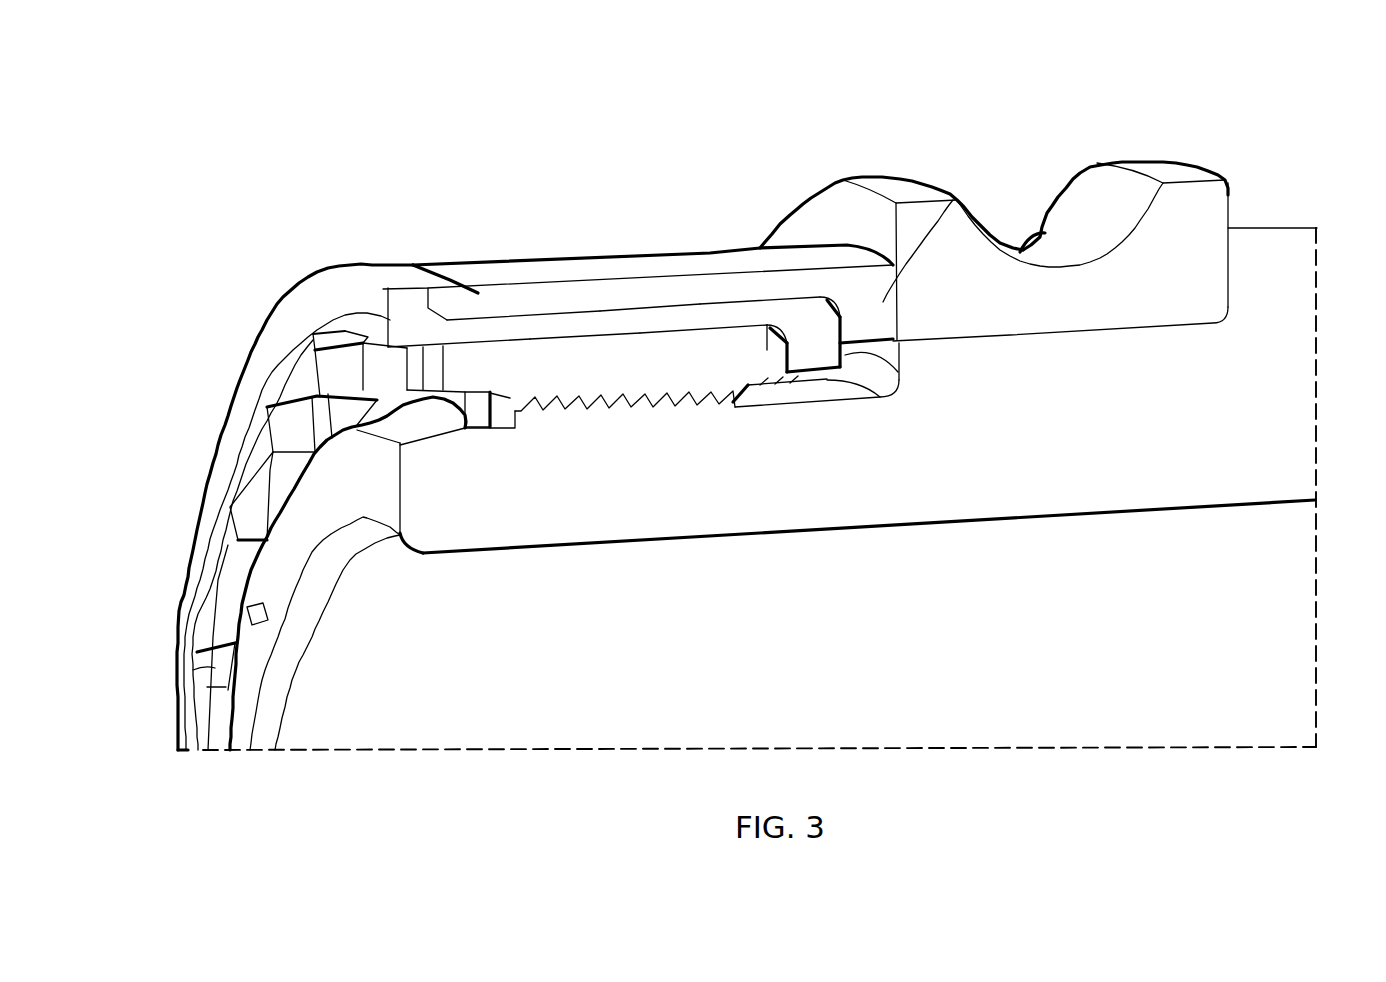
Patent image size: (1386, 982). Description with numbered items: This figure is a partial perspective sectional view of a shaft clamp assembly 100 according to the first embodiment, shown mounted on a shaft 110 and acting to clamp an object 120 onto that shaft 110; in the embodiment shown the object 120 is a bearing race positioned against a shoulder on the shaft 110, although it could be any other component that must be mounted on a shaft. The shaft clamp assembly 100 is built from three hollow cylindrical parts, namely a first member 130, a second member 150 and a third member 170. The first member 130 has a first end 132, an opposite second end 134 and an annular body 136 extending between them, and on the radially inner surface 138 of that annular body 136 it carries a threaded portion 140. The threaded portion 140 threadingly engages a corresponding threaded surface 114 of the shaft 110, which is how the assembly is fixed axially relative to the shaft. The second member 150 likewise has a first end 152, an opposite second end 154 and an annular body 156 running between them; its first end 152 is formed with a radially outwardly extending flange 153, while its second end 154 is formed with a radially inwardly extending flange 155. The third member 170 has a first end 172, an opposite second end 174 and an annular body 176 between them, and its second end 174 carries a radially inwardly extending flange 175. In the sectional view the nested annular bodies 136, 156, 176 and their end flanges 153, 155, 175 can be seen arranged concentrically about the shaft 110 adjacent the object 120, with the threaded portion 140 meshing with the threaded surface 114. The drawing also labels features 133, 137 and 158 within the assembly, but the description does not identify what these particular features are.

The shaft clamp assembly 100 is at (262, 268).
The shaft 110 is at (1290, 413).
The threaded surface 114 is at (556, 412).
The object 120 is at (1230, 197).
The first member 130 is at (496, 330).
The first end 132 is at (268, 405).
The ribs 133 is at (197, 652).
The second end 134 is at (770, 325).
The annular body 136 is at (590, 340).
The edge 137 is at (567, 330).
The radially inner surface 138 is at (610, 405).
The threaded portion 140 is at (636, 404).
The second member 150 is at (529, 327).
The first end 152 is at (407, 293).
The radially outwardly extending flange 153 is at (348, 353).
The second end 154 is at (810, 313).
The radially inwardly extending flange 155 is at (855, 227).
The annular body 156 is at (631, 317).
The groove 158 is at (640, 333).
The third member 170 is at (505, 298).
The first end 172 is at (450, 268).
The second end 174 is at (867, 287).
The radially inwardly extending flange 175 is at (955, 200).
The annular body 176 is at (699, 288).